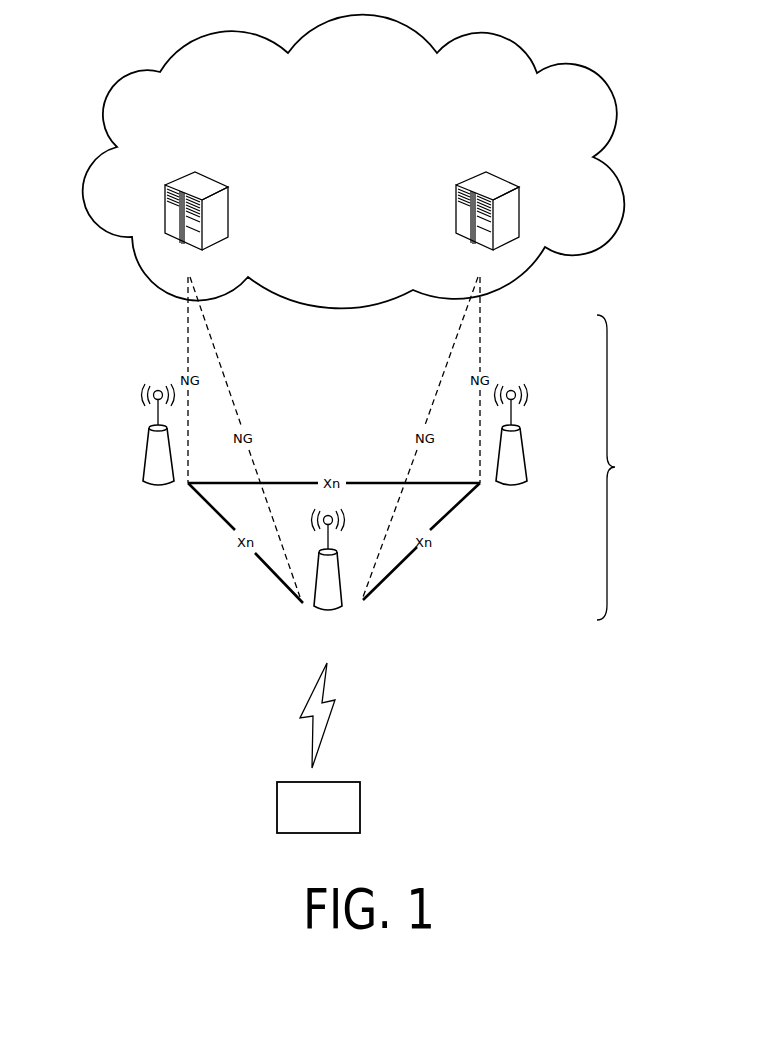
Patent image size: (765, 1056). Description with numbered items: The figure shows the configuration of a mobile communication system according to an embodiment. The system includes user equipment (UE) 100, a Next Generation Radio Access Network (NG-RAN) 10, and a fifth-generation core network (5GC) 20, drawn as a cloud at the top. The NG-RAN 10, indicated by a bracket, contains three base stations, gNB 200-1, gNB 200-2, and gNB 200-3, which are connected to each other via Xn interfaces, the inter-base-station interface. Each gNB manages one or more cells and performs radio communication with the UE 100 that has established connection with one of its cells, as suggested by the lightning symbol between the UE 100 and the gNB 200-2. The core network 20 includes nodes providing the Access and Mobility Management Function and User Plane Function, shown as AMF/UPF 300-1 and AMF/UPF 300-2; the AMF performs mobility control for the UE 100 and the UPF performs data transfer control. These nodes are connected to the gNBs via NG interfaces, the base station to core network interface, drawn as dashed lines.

The 5G core network (5GC) 20 is at (520, 47).
The AMF/UPF 300-1 is at (213, 180).
The AMF/UPF 300-2 is at (500, 178).
The gNB 200-1 is at (147, 458).
The gNB 200-2 is at (343, 588).
The gNB 200-3 is at (522, 445).
The 5G radio access network (NG-RAN) 10 is at (642, 467).
The user equipment (UE) 100 is at (360, 808).